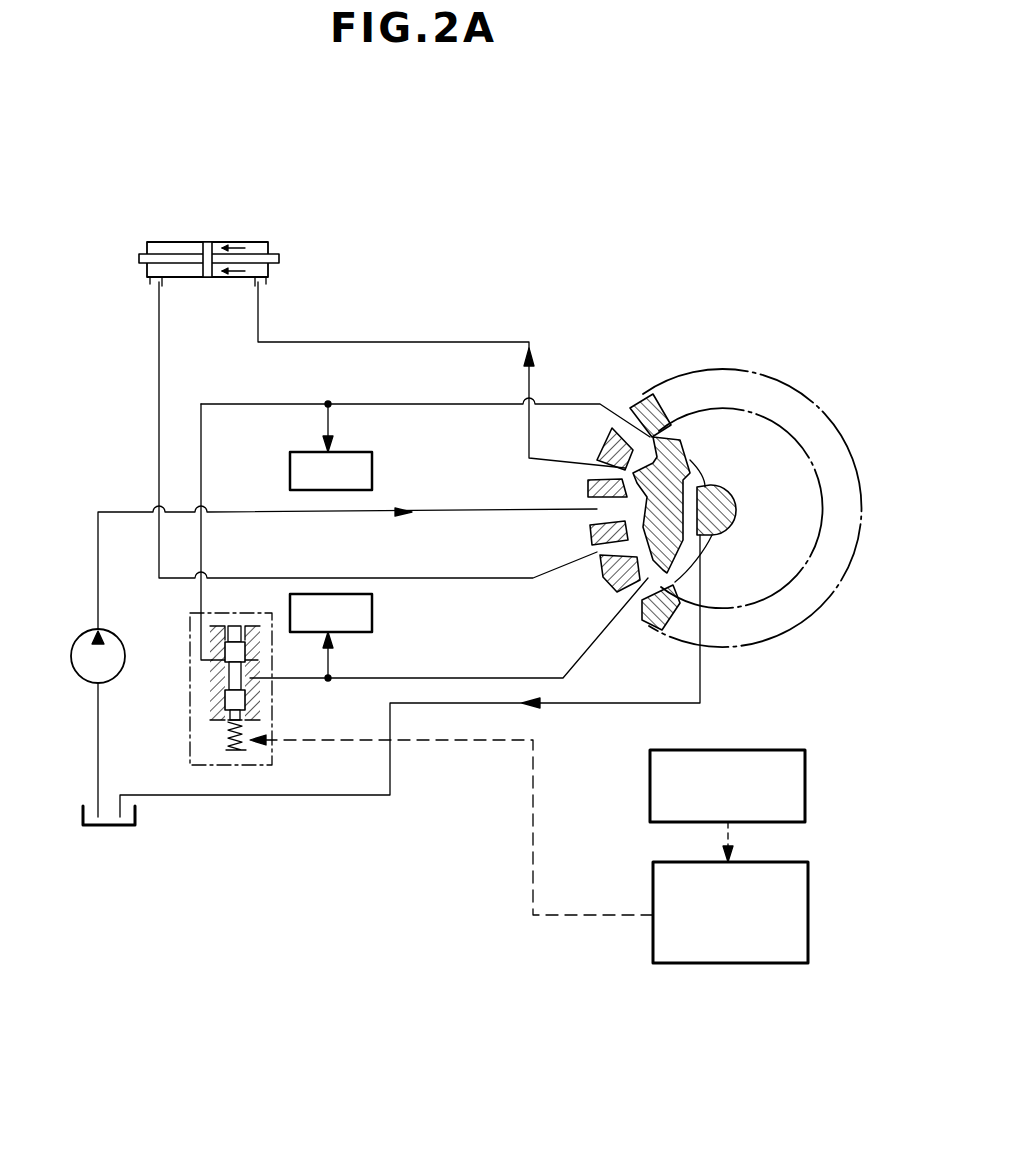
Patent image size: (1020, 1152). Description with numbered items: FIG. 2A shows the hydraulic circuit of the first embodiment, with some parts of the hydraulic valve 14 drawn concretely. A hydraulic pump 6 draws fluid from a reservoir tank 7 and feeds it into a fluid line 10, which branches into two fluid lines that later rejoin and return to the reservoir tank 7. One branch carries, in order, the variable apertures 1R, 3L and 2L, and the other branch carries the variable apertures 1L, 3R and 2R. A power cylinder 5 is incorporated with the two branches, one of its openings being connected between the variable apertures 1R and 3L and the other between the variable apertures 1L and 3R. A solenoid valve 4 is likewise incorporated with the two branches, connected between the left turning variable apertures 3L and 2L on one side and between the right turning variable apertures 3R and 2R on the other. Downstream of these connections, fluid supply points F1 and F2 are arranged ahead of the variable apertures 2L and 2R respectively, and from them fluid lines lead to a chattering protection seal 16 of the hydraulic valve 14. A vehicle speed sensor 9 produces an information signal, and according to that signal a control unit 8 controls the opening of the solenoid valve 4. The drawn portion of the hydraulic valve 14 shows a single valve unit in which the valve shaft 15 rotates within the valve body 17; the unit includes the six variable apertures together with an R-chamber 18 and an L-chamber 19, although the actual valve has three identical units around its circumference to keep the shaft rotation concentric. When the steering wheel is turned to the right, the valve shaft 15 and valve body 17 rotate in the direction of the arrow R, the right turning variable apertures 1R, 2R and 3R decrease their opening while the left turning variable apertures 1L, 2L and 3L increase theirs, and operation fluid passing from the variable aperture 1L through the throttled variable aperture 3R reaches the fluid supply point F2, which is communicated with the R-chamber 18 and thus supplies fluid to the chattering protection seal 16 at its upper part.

The solenoid valve 4 is at (190, 704).
The power cylinder 5 is at (190, 242).
The hydraulic pump 6 is at (88, 640).
The reservoir tank 7 is at (84, 808).
The control unit 8 is at (804, 864).
The vehicle speed sensor 9 is at (772, 750).
The fluid line 10 is at (328, 513).
The hydraulic valve 14 is at (806, 382).
The valve shaft 15 is at (702, 440).
The chattering protection seal 16 is at (331, 542).
The valve body 17 is at (646, 398).
The R-chamber 18 is at (658, 442).
The L-chamber 19 is at (648, 592).
The variable aperture 1L is at (605, 481).
The variable aperture 1R is at (598, 520).
The left turning variable aperture 2L is at (673, 586).
The right turning variable aperture 2R is at (640, 432).
The left turning variable aperture 3L is at (618, 557).
The right turning variable aperture 3R is at (628, 468).
The arrow R is at (686, 502).
The fluid supply point F1 is at (329, 682).
The fluid supply point F2 is at (329, 401).